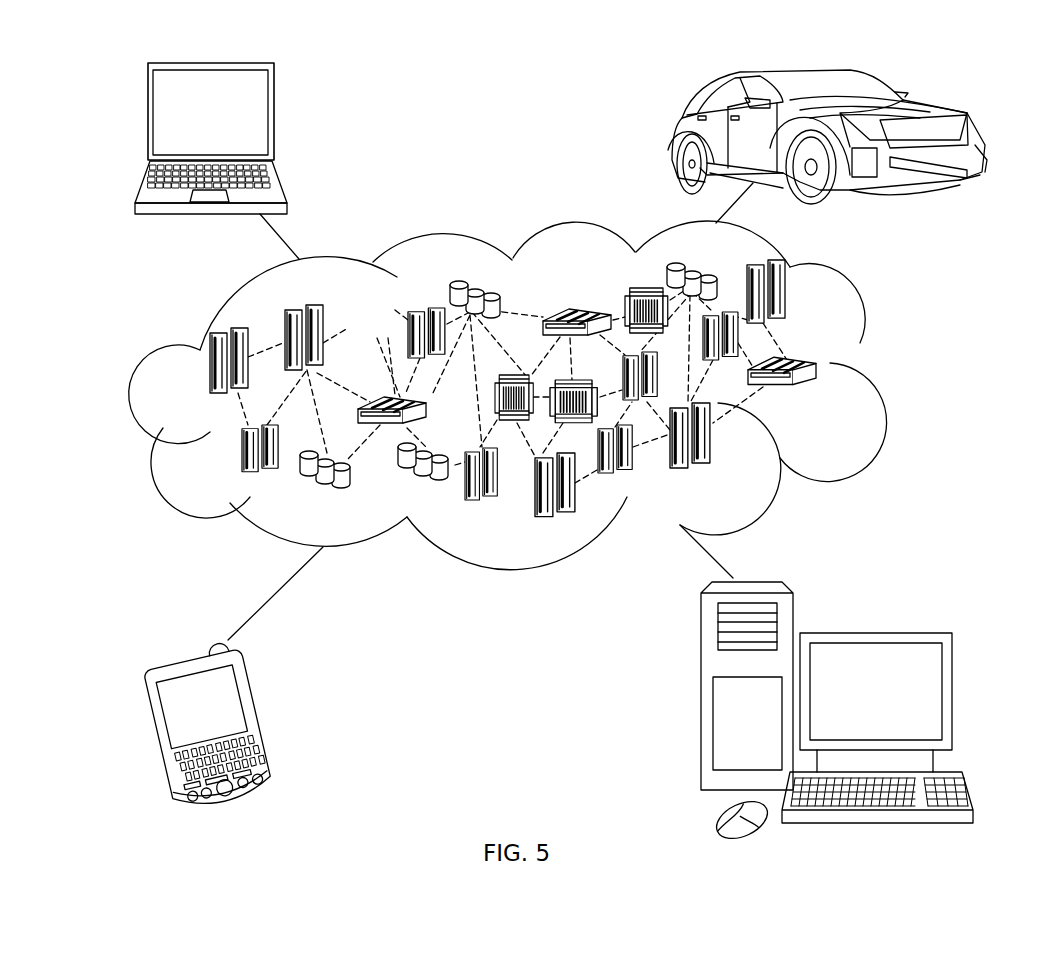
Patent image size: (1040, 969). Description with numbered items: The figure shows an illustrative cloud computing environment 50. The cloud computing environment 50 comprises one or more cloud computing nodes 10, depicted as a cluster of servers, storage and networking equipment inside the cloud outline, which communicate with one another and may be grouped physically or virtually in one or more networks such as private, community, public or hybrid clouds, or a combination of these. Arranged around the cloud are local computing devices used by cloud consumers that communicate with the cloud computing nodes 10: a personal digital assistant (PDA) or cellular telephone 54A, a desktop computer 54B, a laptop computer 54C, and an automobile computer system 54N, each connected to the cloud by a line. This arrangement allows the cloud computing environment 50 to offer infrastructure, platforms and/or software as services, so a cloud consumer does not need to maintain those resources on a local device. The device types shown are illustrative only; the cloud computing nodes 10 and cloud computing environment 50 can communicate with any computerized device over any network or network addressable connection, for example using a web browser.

The cloud computing node 10 is at (824, 400).
The cloud computing environment 50 is at (877, 370).
The personal digital assistant (PDA) or cellular telephone 54A is at (263, 713).
The desktop computer 54B is at (873, 633).
The laptop computer 54C is at (275, 118).
The automobile computer system 54N is at (672, 135).